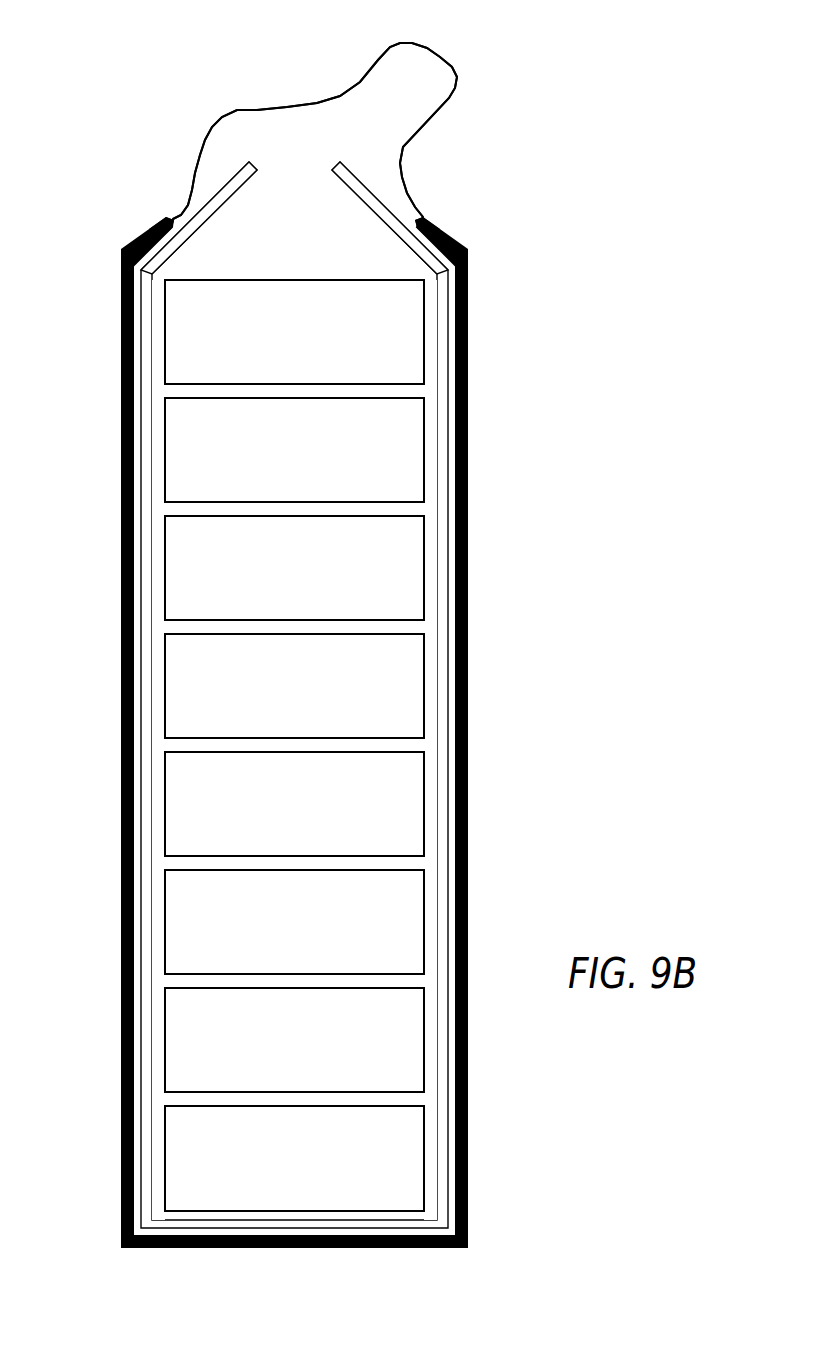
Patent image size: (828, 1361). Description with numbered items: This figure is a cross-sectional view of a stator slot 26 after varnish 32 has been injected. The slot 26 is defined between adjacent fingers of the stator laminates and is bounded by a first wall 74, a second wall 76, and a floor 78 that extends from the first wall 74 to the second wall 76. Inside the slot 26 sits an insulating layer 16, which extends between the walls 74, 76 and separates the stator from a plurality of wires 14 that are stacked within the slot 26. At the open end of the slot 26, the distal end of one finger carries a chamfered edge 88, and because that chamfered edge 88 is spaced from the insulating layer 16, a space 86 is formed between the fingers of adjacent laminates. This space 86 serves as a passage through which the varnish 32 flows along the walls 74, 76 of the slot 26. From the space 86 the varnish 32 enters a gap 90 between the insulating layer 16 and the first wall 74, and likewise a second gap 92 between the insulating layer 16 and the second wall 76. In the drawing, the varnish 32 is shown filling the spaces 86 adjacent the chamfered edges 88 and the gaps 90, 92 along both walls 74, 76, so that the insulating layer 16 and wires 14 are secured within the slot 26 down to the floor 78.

The wires 14 is at (307, 338).
The insulating layer 16 is at (350, 185).
The slot 26 is at (272, 88).
The varnish 32 is at (358, 113).
The first wall 74 is at (121, 528).
The second wall 76 is at (469, 580).
The floor 78 is at (383, 1249).
The space 86 is at (178, 219).
The chamfered edge 88 is at (172, 213).
The gap 90 is at (133, 410).
The second gap 92 is at (470, 452).